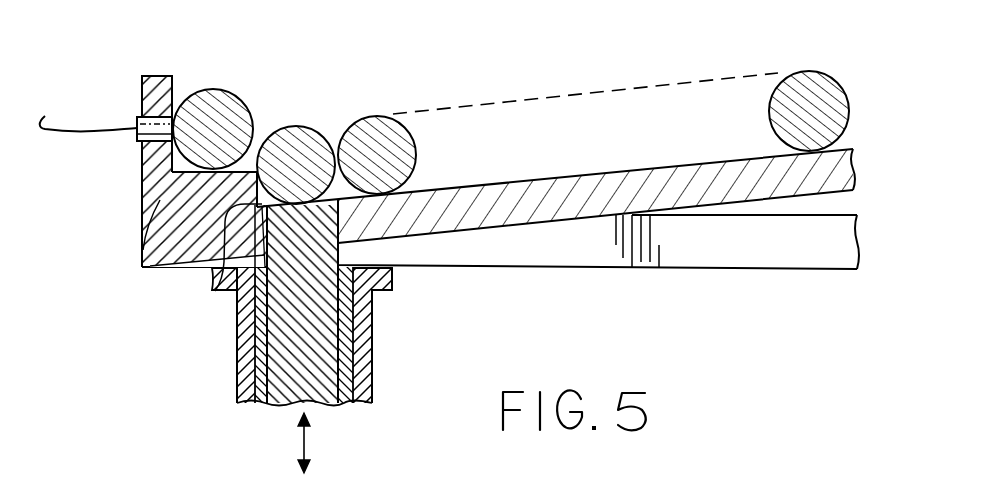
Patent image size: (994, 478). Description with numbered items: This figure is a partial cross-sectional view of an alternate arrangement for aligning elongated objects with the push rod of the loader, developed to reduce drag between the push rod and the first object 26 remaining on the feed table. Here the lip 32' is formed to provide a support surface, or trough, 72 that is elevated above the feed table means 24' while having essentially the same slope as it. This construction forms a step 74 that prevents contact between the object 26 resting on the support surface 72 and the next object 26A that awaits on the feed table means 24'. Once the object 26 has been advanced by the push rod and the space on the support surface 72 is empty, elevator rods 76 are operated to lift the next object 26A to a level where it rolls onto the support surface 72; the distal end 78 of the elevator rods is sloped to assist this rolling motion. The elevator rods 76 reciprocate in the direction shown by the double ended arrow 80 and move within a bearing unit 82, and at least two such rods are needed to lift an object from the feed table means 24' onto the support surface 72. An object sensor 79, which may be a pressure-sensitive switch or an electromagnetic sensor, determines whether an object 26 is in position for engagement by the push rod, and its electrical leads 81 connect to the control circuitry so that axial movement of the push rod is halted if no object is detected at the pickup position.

The feed table means 24' is at (556, 145).
The object 26 is at (240, 92).
The next object 26A is at (310, 127).
The lip 32' is at (110, 171).
The support surface (trough) 72 is at (142, 250).
The step 74 is at (212, 291).
The elevator rods 76 is at (330, 317).
The distal end of the elevator rods 78 is at (238, 320).
The object sensor 79 is at (134, 117).
The double ended arrow 80 is at (305, 440).
The electrical leads 81 is at (108, 133).
The bearing unit 82 is at (237, 370).